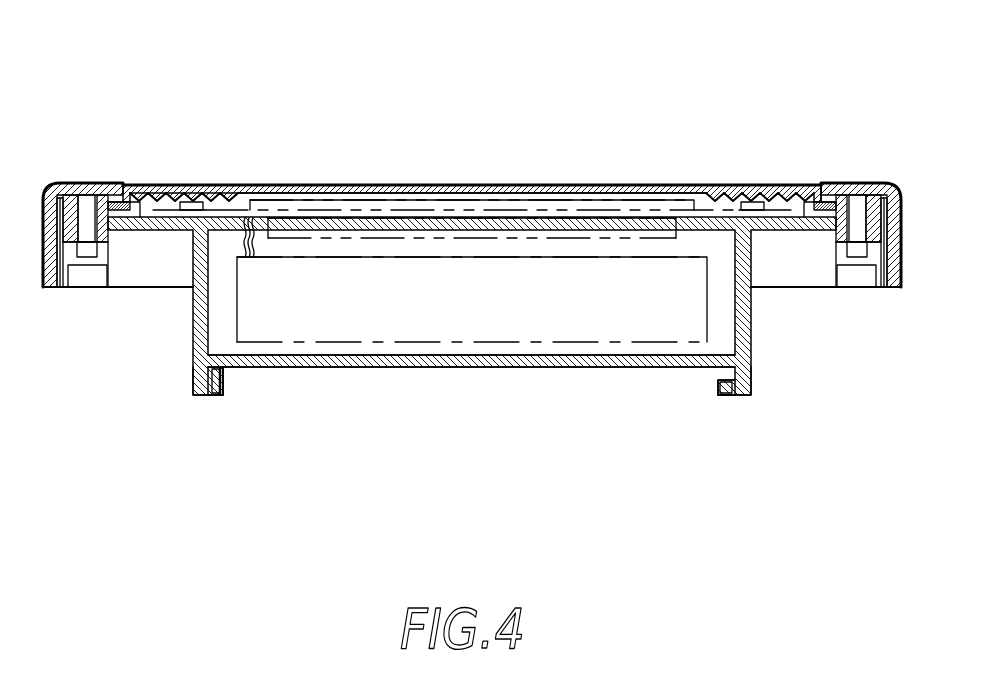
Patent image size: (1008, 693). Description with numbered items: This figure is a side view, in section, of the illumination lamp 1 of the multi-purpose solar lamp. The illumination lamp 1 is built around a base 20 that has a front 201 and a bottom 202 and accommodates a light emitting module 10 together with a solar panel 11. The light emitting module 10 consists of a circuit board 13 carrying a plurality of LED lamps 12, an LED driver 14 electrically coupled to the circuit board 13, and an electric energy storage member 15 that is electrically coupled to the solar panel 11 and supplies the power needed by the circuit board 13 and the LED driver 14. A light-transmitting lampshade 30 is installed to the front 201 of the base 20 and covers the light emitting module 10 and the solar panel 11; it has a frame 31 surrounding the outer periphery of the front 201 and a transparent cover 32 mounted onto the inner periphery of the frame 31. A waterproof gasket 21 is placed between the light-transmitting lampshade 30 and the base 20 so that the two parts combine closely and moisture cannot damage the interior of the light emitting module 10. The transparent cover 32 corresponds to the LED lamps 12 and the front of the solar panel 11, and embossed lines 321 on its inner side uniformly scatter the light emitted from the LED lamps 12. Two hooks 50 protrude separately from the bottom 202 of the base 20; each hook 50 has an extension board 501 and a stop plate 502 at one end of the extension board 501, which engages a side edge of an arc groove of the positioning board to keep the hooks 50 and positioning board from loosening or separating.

The illumination lamp 1 is at (776, 60).
The light emitting module 10 is at (385, 368).
The solar panel 11 is at (618, 198).
The LED lamps 12 is at (191, 190).
The circuit board 13 is at (703, 208).
The LED driver 14 is at (615, 215).
The electric energy storage member 15 is at (467, 345).
The base 20 is at (193, 333).
The front 201 is at (794, 182).
The bottom 202 is at (294, 368).
The waterproof gasket 21 is at (827, 183).
The light-transmitting lampshade 30 is at (331, 176).
The frame 31 is at (43, 250).
The transparent cover 32 is at (497, 183).
The embossed lines 321 is at (180, 194).
The hooks 50 is at (215, 404).
The extension board 501 is at (193, 378).
The stop plate 502 is at (207, 397).